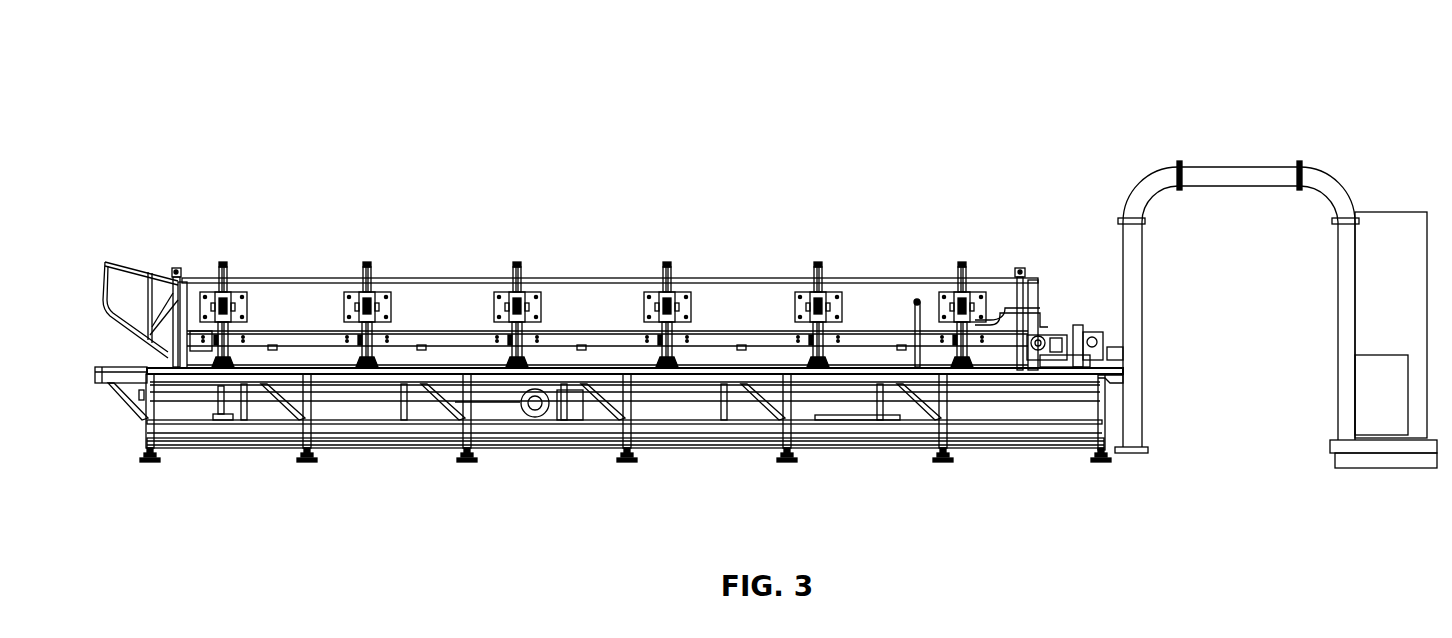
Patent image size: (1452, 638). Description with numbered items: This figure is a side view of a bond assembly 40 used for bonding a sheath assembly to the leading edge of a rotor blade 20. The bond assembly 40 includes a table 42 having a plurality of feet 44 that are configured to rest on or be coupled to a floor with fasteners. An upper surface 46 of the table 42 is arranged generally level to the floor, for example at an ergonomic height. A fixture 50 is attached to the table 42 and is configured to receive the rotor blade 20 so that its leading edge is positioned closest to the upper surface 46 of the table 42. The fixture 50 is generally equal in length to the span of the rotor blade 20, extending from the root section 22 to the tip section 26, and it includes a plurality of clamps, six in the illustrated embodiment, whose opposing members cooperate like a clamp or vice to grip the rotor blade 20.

The bond assembly 40 is at (1128, 52).
The rotor blade 20 is at (458, 297).
The root section 22 is at (992, 272).
The tip section 26 is at (158, 268).
The table 42 is at (735, 372).
The feet 44 is at (465, 463).
The upper surface 46 is at (122, 366).
The fixture 50 is at (668, 250).